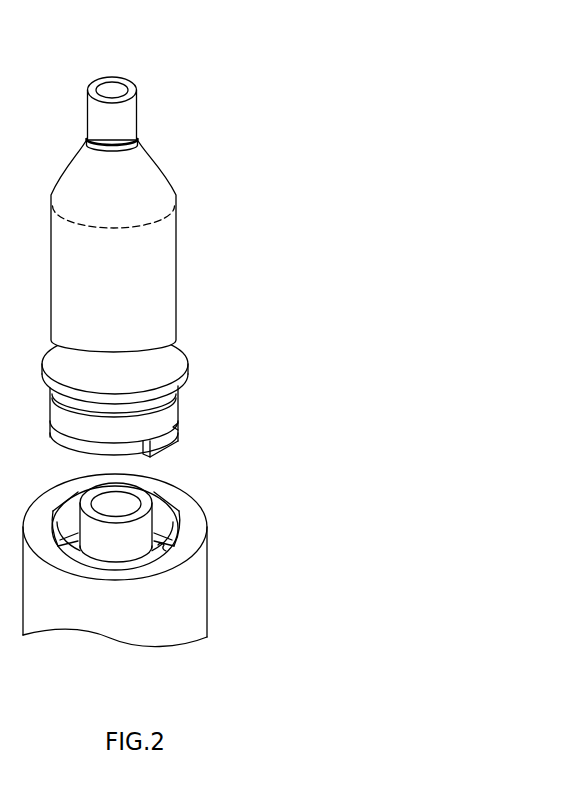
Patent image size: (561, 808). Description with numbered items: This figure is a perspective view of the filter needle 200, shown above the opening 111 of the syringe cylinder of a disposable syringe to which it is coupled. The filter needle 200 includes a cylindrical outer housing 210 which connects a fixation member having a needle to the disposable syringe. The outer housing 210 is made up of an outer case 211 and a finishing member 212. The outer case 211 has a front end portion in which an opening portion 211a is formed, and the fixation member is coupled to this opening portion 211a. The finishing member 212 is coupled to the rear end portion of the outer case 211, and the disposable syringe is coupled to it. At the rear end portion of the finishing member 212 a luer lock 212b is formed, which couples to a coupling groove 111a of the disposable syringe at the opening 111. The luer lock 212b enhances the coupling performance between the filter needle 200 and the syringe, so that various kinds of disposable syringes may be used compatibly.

The filter needle 200 is at (204, 143).
The outer housing 210 is at (255, 240).
The outer case 211 is at (170, 265).
The opening portion 211a is at (113, 90).
The finishing member 212 is at (183, 352).
The luer lock 212b is at (181, 432).
The opening 111 is at (200, 583).
The coupling groove 111a is at (177, 530).